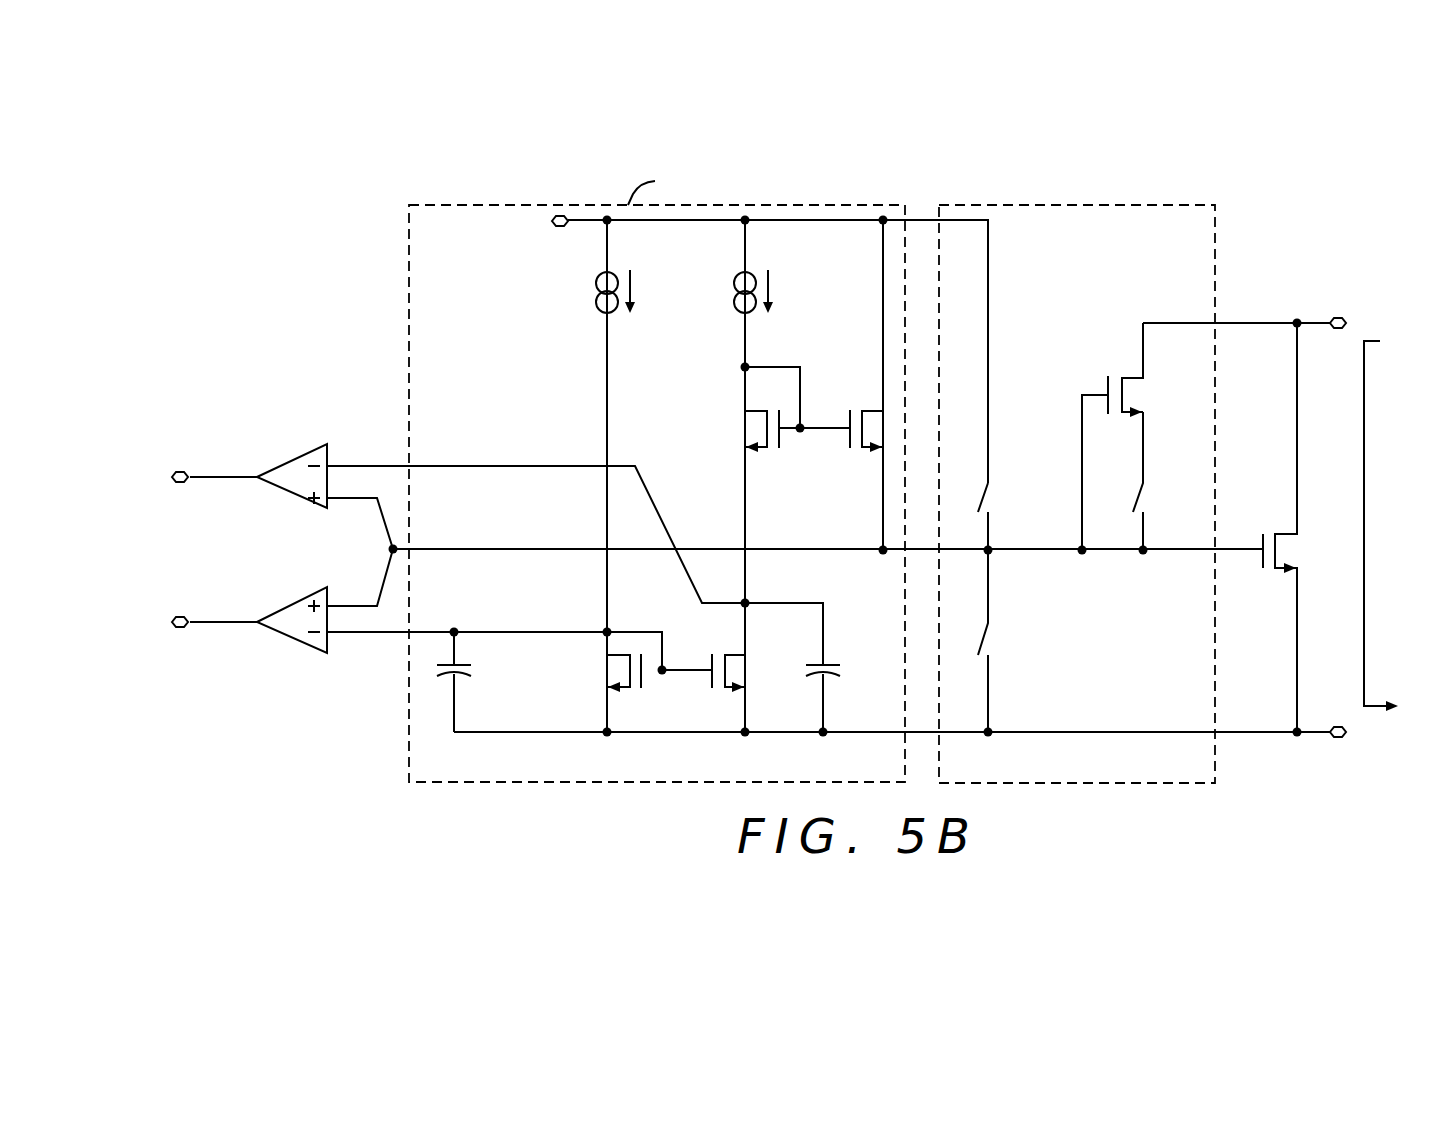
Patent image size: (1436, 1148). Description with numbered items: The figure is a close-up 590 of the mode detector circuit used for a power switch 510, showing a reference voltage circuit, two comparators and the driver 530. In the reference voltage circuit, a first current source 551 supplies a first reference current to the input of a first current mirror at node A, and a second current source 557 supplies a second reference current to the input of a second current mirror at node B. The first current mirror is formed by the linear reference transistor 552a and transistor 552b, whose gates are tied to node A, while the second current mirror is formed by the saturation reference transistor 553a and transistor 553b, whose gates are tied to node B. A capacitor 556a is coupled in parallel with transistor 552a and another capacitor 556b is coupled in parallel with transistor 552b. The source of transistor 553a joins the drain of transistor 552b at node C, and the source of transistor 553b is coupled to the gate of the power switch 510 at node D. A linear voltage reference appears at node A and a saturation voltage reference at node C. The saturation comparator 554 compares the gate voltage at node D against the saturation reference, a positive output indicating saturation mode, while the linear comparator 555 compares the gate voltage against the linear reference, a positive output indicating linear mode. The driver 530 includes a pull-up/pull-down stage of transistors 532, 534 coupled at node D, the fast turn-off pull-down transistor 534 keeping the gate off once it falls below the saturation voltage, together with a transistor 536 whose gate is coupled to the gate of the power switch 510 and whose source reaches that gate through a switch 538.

The mode detector close-up 590 is at (338, 246).
The first current source 551 is at (595, 288).
The second current source 557 is at (733, 304).
The saturation reference transistor Msat-ref 553a is at (789, 458).
The transistor of second current mirror 553b is at (860, 400).
The linear reference transistor Mlin-ref 552a is at (628, 694).
The transistor of first current mirror 552b is at (718, 694).
The capacitor 556a is at (437, 684).
The capacitor 556b is at (800, 666).
The saturation comparator 554 is at (293, 460).
The linear comparator 555 is at (293, 640).
The driver 530 is at (1107, 783).
The pull-up transistor 532 is at (993, 507).
The pull-down transistor Moff_fast 534 is at (993, 648).
The transistor 536 is at (1110, 372).
The switch 538 is at (1148, 507).
The power switch 510 is at (1305, 553).